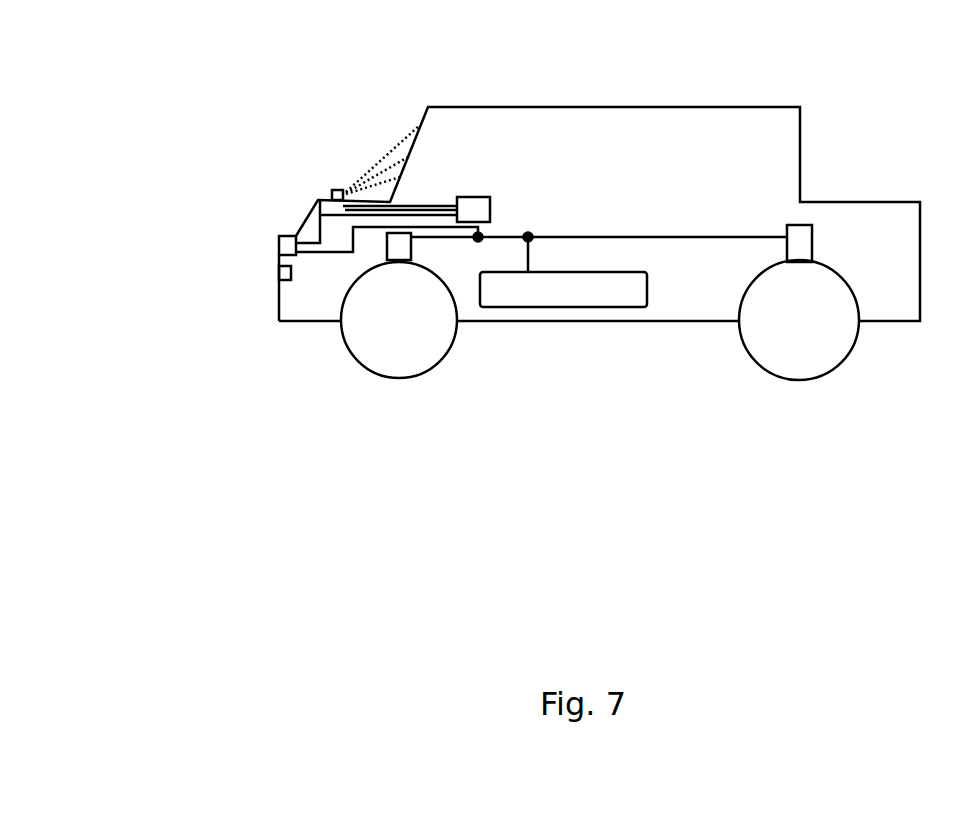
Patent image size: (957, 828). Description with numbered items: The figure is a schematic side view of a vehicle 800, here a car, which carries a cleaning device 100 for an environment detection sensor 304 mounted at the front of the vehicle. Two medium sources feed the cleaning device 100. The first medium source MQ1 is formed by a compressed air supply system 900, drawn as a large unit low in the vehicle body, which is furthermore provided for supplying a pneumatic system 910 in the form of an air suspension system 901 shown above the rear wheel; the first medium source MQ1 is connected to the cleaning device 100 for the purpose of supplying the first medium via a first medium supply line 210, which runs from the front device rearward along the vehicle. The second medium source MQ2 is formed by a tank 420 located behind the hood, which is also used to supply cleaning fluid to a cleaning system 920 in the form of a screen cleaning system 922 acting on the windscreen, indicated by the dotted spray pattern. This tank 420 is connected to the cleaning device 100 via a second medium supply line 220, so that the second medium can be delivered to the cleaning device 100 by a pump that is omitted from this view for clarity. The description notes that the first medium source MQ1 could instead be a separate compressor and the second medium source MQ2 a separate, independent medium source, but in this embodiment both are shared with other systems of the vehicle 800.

The vehicle 800 is at (808, 37).
The cleaning device 100 is at (286, 232).
The environment detection sensor 304 is at (278, 272).
The second medium supply line 220 is at (320, 199).
The first medium supply line 210 is at (351, 254).
The cleaning system 920 is at (394, 135).
The screen cleaning system 922 is at (340, 176).
The tank 420 is at (490, 207).
The second medium source MQ2 is at (523, 142).
The air suspension system 901 is at (743, 188).
The pneumatic system 910 is at (799, 243).
The compressed air supply system 900 is at (488, 298).
The first medium source MQ1 is at (557, 364).